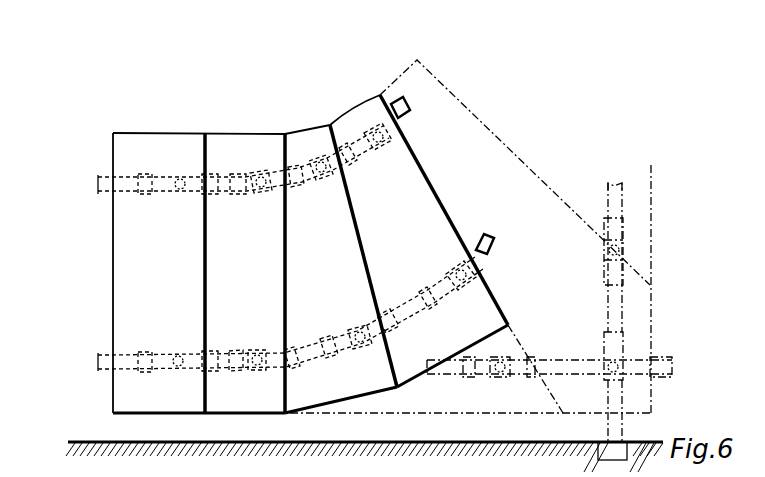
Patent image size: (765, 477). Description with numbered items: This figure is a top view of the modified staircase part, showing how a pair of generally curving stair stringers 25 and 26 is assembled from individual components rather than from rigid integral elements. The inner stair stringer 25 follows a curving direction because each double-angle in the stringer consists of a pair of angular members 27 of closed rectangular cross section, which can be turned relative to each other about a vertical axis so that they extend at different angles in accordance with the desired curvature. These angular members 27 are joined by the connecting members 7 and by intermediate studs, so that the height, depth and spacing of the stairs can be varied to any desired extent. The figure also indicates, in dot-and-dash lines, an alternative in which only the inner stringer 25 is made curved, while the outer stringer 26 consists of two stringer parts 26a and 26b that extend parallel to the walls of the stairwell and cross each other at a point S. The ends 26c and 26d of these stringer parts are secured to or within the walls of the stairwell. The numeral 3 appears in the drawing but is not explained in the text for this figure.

The folding door panel assembly 3 is at (229, 141).
The connecting member 7 is at (224, 197).
The inner stair stringer 25 is at (238, 200).
The angular member 27 is at (343, 152).
The outer stair stringer 26 is at (352, 331).
The stringer part 26a is at (471, 375).
The stringer part 26b is at (622, 226).
The end of stringer part 26c is at (638, 358).
The end of stringer part 26d is at (622, 405).
The crossing point S is at (610, 360).